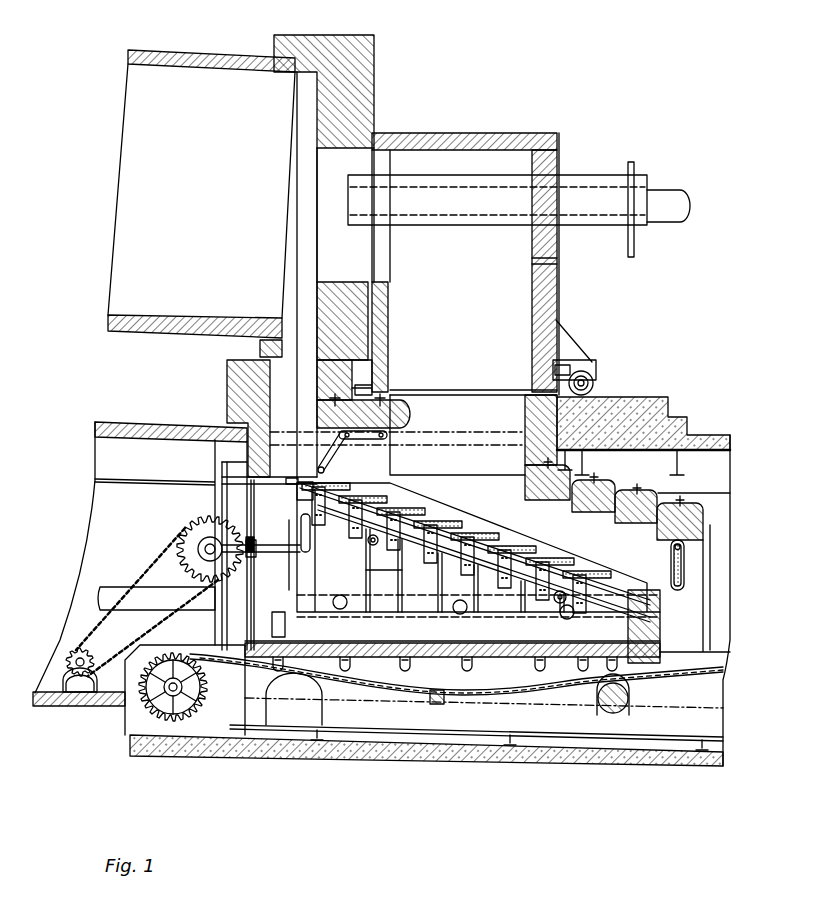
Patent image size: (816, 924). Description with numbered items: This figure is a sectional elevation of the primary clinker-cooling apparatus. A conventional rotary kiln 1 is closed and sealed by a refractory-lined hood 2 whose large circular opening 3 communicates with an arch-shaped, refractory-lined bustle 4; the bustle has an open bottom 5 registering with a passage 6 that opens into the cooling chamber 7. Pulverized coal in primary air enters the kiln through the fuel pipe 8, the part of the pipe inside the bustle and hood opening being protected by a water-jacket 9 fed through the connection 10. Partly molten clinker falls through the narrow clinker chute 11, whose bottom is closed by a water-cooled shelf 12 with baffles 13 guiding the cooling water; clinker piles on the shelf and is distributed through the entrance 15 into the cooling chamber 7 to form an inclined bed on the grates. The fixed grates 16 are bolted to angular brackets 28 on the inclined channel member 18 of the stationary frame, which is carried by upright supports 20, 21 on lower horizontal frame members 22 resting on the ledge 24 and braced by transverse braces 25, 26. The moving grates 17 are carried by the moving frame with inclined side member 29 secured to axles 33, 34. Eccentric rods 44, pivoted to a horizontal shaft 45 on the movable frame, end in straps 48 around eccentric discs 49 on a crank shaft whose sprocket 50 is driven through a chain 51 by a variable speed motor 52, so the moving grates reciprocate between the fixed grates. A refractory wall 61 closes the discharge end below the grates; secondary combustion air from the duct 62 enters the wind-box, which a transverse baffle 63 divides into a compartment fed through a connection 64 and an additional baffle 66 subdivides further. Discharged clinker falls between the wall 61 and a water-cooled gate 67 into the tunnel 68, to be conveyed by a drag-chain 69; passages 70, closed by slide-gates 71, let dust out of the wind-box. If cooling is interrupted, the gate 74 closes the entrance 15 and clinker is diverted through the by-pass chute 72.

The rotary kiln 1 is at (201, 203).
The refractory-lined hood 2 is at (298, 5).
The circular opening 3 is at (345, 274).
The bustle 4 is at (470, 133).
The open bottom 5 is at (466, 391).
The passage 6 is at (413, 434).
The cooling chamber 7 is at (447, 487).
The fuel pipe 8 is at (668, 206).
The water-jacket 9 is at (472, 178).
The connection 10 is at (636, 249).
The clinker chute 11 is at (262, 418).
The water-cooled shelf 12 is at (295, 478).
The baffles 13 is at (297, 488).
The entrance 15 is at (361, 480).
The fixed grates 16 is at (330, 490).
The moving grates 17 is at (372, 504).
The inclined channel member 18 is at (455, 523).
The upright support 20 is at (300, 582).
The upright support 21 is at (463, 590).
The lower horizontal frame members 22 is at (430, 620).
The ledge 24 is at (378, 618).
The transverse brace 25 is at (291, 549).
The transverse brace 26 is at (311, 626).
The angular brackets 28 is at (505, 545).
The inclined side member 29 is at (360, 541).
The axle 33 is at (366, 555).
The axle 34 is at (543, 614).
The eccentric rods 44 is at (294, 543).
The horizontal shaft 45 is at (298, 525).
The straps 48 is at (208, 535).
The eccentric disc 49 is at (205, 562).
The sprocket 50 is at (190, 548).
The chain 51 is at (150, 560).
The variable speed motor 52 is at (66, 662).
The refractory wall 61 is at (660, 637).
The duct 62 is at (156, 598).
The transverse baffle 63 is at (397, 589).
The connection 64 is at (350, 585).
The additional baffle 66 is at (528, 602).
The water-cooled gate 67 is at (668, 562).
The tunnel 68 is at (456, 691).
The drag-chain 69 is at (576, 731).
The passages 70 is at (408, 664).
The slide-gates 71 is at (271, 624).
The clinker by-pass chute 72 is at (223, 690).
The gate 74 is at (356, 439).